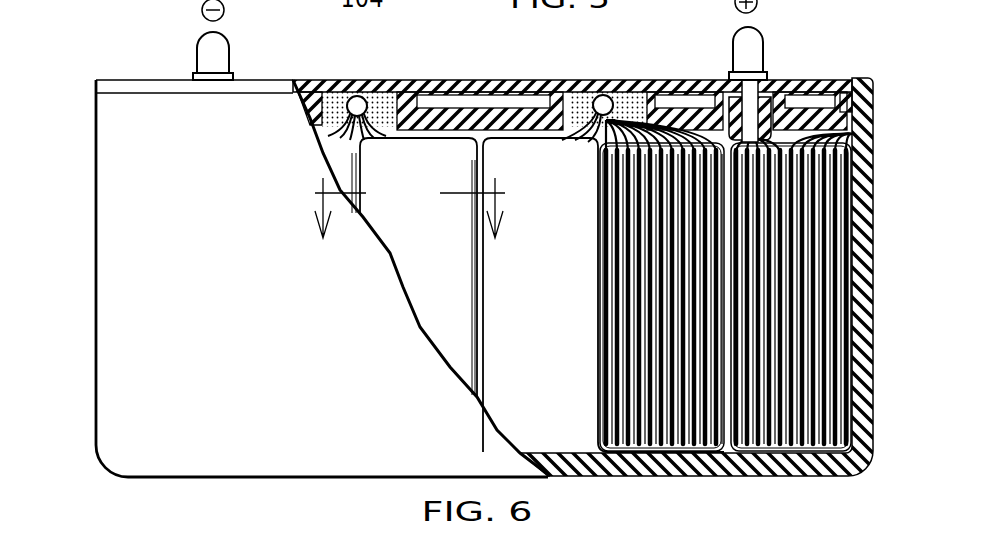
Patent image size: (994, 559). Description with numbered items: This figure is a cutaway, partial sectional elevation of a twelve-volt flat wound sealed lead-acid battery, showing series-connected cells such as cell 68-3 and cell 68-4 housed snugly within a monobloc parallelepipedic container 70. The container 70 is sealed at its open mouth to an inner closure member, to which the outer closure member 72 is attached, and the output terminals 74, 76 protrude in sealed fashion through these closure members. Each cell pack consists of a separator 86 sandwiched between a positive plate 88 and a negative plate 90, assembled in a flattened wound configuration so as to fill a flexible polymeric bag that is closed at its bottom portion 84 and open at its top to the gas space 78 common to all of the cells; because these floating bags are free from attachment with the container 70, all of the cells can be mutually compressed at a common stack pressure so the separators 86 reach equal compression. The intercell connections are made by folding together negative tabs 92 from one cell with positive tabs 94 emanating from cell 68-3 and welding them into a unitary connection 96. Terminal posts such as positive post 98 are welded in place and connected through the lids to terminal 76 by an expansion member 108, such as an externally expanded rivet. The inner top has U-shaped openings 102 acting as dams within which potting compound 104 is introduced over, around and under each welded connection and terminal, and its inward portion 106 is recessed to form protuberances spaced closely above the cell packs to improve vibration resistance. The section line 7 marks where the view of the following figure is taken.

The monobloc parallelepipedic container 70 is at (127, 330).
The outer closure member 72 is at (107, 87).
The output terminal 74 is at (220, 50).
The output terminal 76 is at (753, 42).
The gas space 78 is at (709, 115).
The bottom portion 84 is at (786, 458).
The separator 86 is at (605, 238).
The positive plate 88 is at (625, 277).
The negative plate 90 is at (612, 188).
The negative tabs 92 is at (633, 110).
The positive tabs 94 is at (568, 140).
The unitary connection 96 is at (622, 97).
The positive post 98 is at (718, 92).
The U-shaped openings 102 is at (427, 97).
The potting compound 104 is at (377, 100).
The inward portion 106 is at (497, 122).
The expansion member 108 is at (767, 110).
The cell 68-3 is at (510, 403).
The cell 68-4 is at (435, 317).
The section line 7- 7 is at (410, 224).